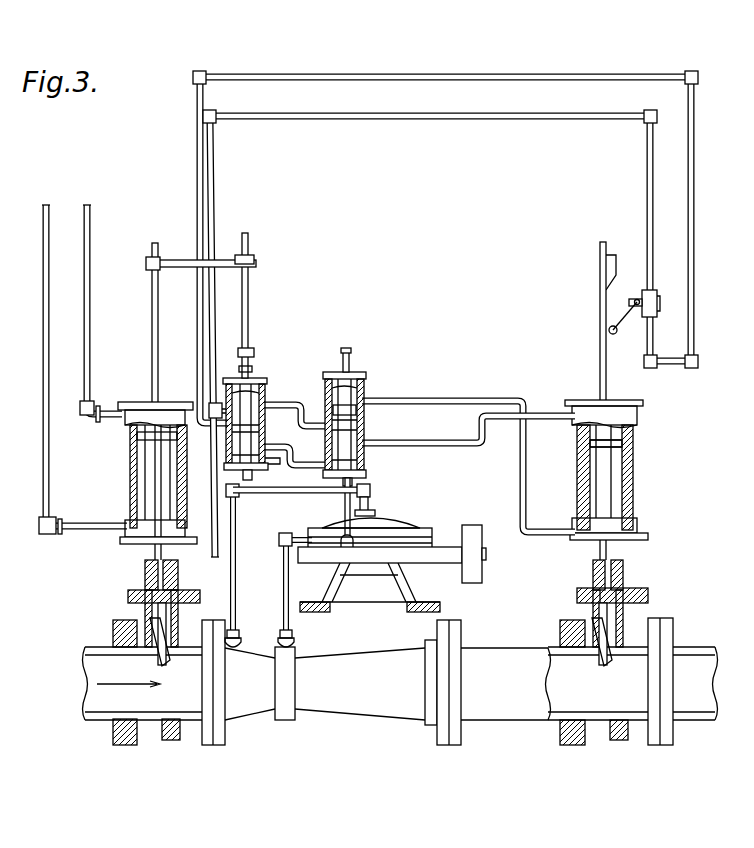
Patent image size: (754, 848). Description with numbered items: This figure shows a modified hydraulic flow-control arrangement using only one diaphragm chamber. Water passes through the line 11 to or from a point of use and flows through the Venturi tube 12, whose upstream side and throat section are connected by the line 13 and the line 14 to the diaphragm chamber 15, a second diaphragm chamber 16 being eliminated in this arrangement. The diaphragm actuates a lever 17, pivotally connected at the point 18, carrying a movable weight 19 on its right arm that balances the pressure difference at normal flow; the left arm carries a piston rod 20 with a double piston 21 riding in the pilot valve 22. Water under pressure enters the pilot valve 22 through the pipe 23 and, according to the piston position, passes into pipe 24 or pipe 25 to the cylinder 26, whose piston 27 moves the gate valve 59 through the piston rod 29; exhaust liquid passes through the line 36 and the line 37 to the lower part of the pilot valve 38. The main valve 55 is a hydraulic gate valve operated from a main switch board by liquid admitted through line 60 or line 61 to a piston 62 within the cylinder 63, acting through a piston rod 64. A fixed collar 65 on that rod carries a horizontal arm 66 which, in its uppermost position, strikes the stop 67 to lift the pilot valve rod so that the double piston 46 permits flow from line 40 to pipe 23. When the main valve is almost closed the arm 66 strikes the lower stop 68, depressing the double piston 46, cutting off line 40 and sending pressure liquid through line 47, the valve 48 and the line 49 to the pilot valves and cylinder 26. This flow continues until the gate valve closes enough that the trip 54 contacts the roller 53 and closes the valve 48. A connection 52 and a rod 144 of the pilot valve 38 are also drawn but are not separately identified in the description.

The line 11 is at (100, 723).
The Venturi tube 12 is at (361, 719).
The line 13 is at (237, 582).
The line 14 is at (288, 584).
The diaphragm chamber 15 is at (396, 512).
The diaphragm chamber 16 is at (378, 511).
The lever 17 is at (440, 546).
The point 18 is at (410, 566).
The movable weight 19 is at (483, 576).
The piston rod 20 is at (358, 372).
The double piston 21 is at (364, 421).
The pilot valve 22 is at (343, 360).
The pipe 23 is at (294, 402).
The pipe 24 is at (452, 398).
The pipe 25 is at (460, 447).
The cylinder 26 is at (634, 431).
The piston 27 is at (635, 466).
The piston rod 29 is at (607, 382).
The line 36 is at (368, 377).
The line 37 is at (312, 493).
The pilot valve 38 is at (267, 380).
The line 40 is at (209, 406).
The double piston 46 is at (226, 388).
The line 47 is at (215, 191).
The valve 48 is at (660, 302).
The line 49 is at (197, 190).
The pipe 52 is at (282, 493).
The roller 53 is at (609, 331).
The trip 54 is at (605, 272).
The main valve 55 is at (172, 742).
The gate valve 59 is at (616, 742).
The line 60 is at (46, 402).
The line 61 is at (91, 323).
The piston 62 is at (131, 435).
The cylinder 63 is at (131, 468).
The piston rod 64 is at (159, 319).
The fixed collar 65 is at (146, 262).
The horizontal arm 66 is at (176, 268).
The stop 67 is at (255, 259).
The lower stop 68 is at (264, 338).
The valve rod 144 is at (256, 355).